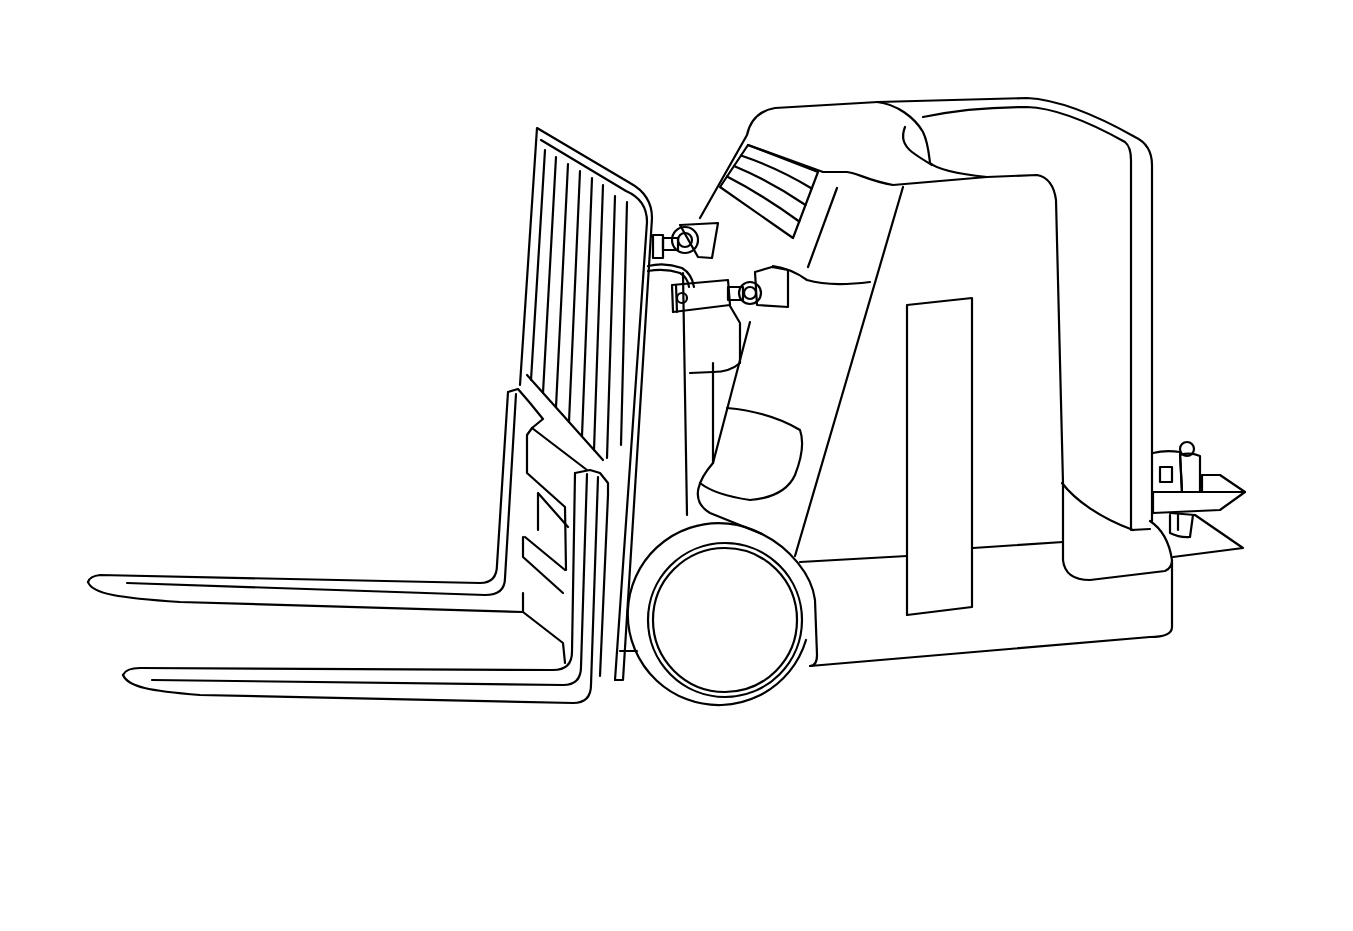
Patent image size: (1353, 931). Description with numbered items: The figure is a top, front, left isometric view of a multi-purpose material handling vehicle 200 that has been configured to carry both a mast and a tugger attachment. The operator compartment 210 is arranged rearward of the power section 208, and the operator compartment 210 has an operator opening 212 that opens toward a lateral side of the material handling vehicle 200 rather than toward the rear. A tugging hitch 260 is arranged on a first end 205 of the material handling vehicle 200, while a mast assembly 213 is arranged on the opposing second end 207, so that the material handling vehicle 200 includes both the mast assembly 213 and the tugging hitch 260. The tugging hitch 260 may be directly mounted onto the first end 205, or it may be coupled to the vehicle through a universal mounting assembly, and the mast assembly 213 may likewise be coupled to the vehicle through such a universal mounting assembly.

The material handling vehicle 200 is at (626, 90).
The first end 205 is at (1158, 146).
The second end 207 is at (632, 662).
The power section 208 is at (797, 140).
The operator compartment 210 is at (993, 146).
The operator opening 212 is at (1082, 278).
The mast assembly 213 is at (481, 398).
The tugging hitch 260 is at (1263, 496).